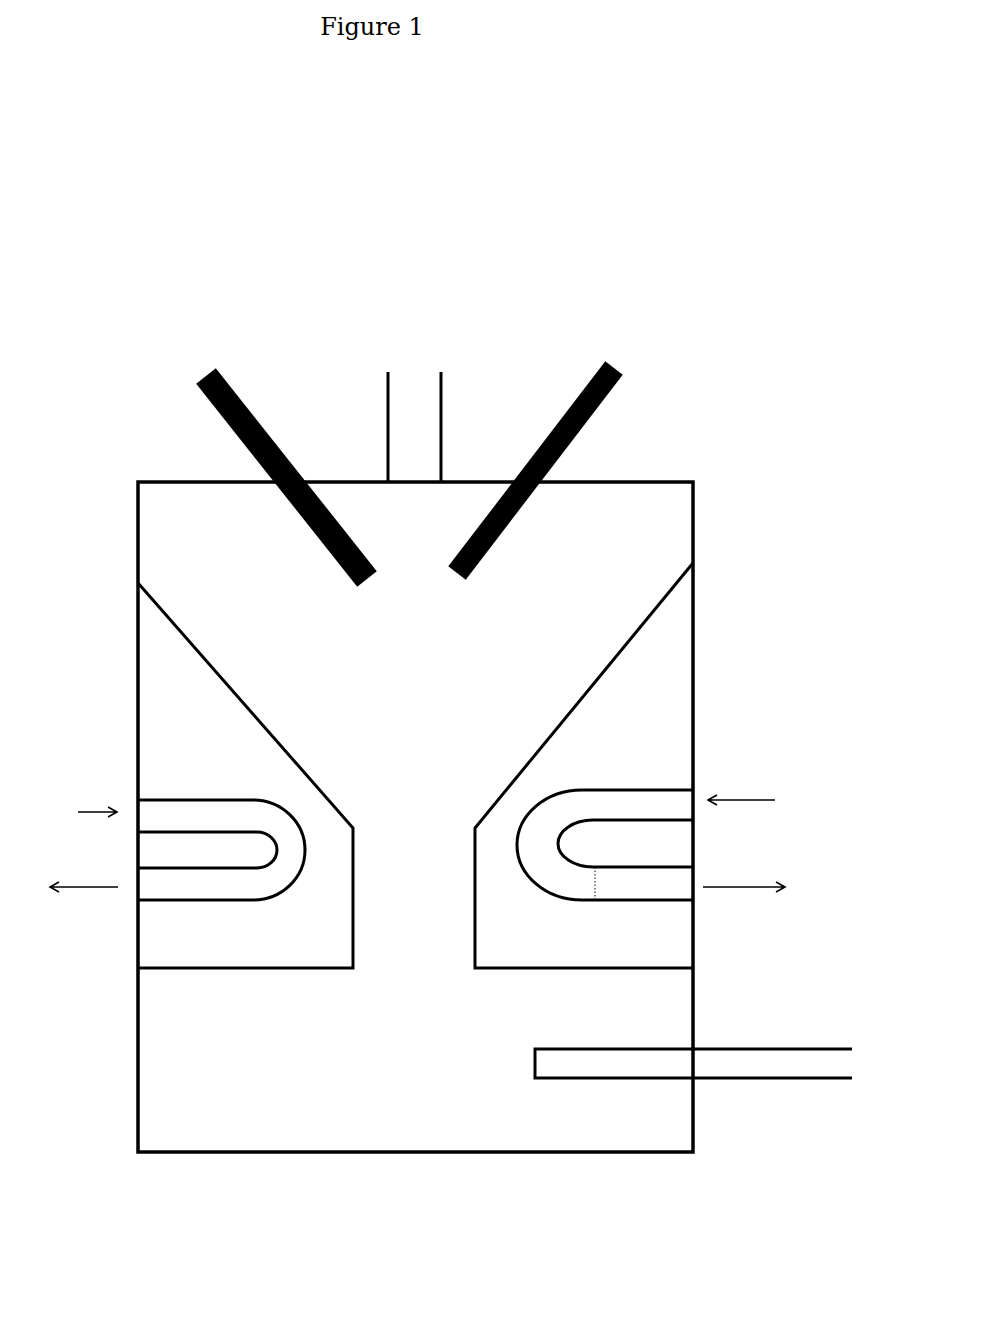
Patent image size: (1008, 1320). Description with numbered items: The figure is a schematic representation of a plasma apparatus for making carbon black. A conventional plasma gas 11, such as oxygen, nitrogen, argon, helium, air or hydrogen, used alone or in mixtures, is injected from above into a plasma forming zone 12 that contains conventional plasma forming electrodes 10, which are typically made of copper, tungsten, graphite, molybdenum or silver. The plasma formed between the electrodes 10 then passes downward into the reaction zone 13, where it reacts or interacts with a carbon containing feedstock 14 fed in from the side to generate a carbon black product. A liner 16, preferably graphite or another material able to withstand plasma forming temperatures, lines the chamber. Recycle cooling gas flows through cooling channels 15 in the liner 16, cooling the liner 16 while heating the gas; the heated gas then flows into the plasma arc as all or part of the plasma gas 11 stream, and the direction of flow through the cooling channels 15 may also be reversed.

The plasma forming electrodes 10 is at (236, 336).
The plasma gas 11 is at (420, 396).
The plasma forming zone 12 is at (415, 725).
The reaction zone 13 is at (415, 1060).
The carbon containing feedstock 14 is at (831, 1068).
The cooling channels 15 is at (431, 839).
The liner 16 is at (415, 765).